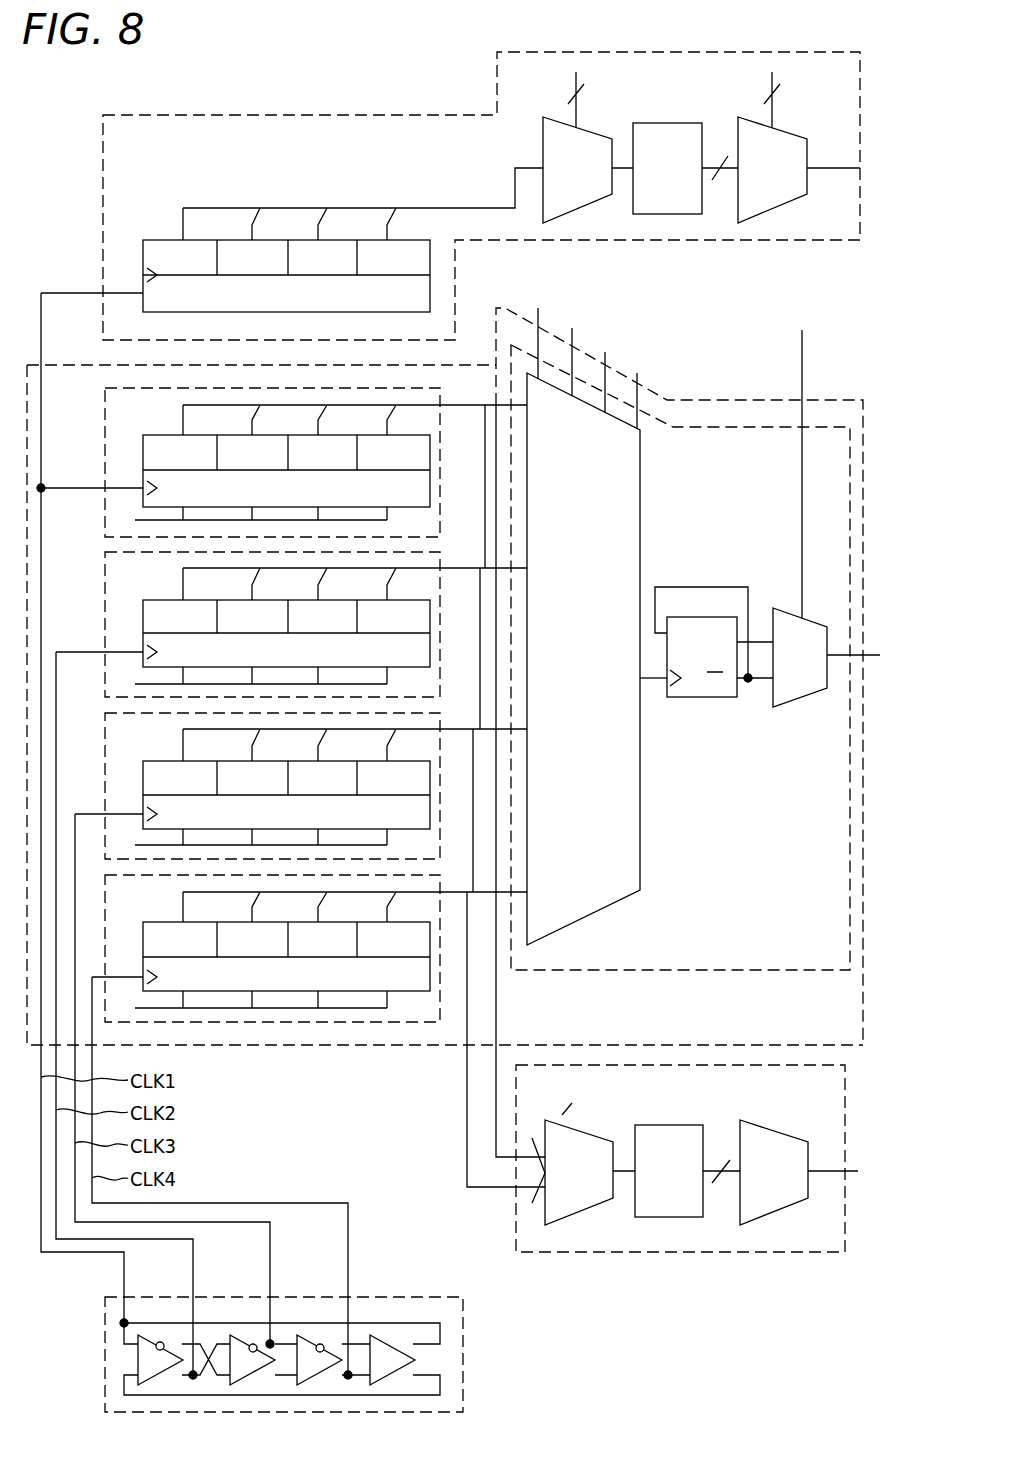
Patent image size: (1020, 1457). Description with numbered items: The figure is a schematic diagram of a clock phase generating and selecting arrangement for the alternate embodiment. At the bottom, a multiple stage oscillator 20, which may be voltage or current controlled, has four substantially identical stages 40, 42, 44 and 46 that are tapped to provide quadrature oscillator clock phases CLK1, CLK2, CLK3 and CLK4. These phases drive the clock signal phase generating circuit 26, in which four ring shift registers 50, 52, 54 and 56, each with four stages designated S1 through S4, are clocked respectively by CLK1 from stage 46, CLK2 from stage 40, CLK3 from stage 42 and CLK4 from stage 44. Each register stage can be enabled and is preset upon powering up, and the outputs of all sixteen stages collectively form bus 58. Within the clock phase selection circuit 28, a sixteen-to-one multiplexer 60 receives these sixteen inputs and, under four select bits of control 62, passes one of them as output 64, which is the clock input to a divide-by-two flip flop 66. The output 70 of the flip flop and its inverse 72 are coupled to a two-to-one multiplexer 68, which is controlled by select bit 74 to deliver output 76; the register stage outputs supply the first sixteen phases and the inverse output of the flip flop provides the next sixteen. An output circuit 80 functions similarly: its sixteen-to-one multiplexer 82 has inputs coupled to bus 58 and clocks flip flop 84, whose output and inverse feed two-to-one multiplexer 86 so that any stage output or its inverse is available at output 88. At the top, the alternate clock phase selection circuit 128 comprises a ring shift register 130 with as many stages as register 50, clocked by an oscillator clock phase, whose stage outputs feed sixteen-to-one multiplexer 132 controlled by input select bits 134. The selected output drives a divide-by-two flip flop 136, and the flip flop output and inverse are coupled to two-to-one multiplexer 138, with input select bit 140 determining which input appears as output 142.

The oscillator 20 is at (311, 1335).
The clock signal phase generating circuit 26 is at (377, 1048).
The clock phase selection circuit 28 is at (650, 972).
The oscillator stage 40 is at (152, 1338).
The oscillator stage 42 is at (245, 1338).
The oscillator stage 44 is at (310, 1338).
The oscillator stage 46 is at (385, 1338).
The ring shift register 50 is at (143, 455).
The ring shift register 52 is at (143, 620).
The ring shift register 54 is at (143, 782).
The ring shift register 56 is at (143, 942).
The bus 58 is at (498, 1016).
The multiplexer 60 is at (641, 496).
The select bits of control 62 is at (672, 372).
The output 64 is at (655, 679).
The flip flop 66 is at (706, 697).
The multiplexer 68 is at (817, 614).
The output 70 is at (760, 641).
The inverse 72 is at (765, 681).
The select bit 74 is at (802, 372).
The output 76 is at (837, 658).
The output circuit 80 is at (643, 1252).
The multiplexer 82 is at (570, 1122).
The flip flop 84 is at (648, 1125).
The multiplexer 86 is at (752, 1120).
The output 88 is at (827, 1178).
The clock phase selection circuit 128 is at (343, 115).
The ring shift register 130 is at (143, 258).
The multiplexer 132 is at (542, 150).
The input select bits 134 is at (572, 88).
The flip flop 136 is at (645, 123).
The multiplexer 138 is at (783, 129).
The input select bit 140 is at (765, 88).
The output 142 is at (832, 177).